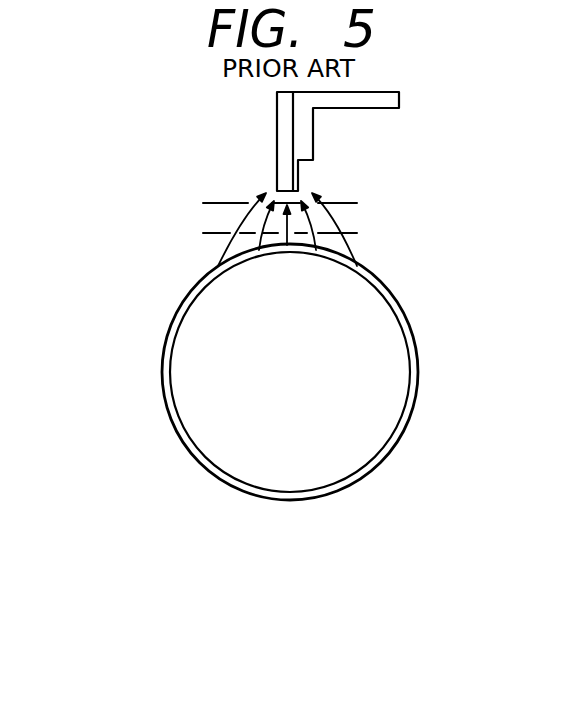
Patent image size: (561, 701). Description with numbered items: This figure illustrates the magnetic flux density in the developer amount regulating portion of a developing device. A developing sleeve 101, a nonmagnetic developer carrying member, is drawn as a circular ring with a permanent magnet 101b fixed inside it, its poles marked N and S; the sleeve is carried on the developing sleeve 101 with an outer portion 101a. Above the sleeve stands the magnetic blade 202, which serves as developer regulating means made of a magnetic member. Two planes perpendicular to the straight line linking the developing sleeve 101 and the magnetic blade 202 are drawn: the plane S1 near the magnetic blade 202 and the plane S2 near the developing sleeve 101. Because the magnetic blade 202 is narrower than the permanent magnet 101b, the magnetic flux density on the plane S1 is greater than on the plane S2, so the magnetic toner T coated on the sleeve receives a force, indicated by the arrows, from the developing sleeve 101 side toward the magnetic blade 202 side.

The magnetic blade 202 is at (277, 128).
The plane near the magnetic blade S1 is at (357, 203).
The plane near the developing sleeve S2 is at (357, 233).
The magnetic toner T is at (393, 293).
The developing sleeve 101 is at (234, 372).
The outer ring of rotor magnet 101a is at (164, 400).
The permanent magnet 101b is at (266, 372).